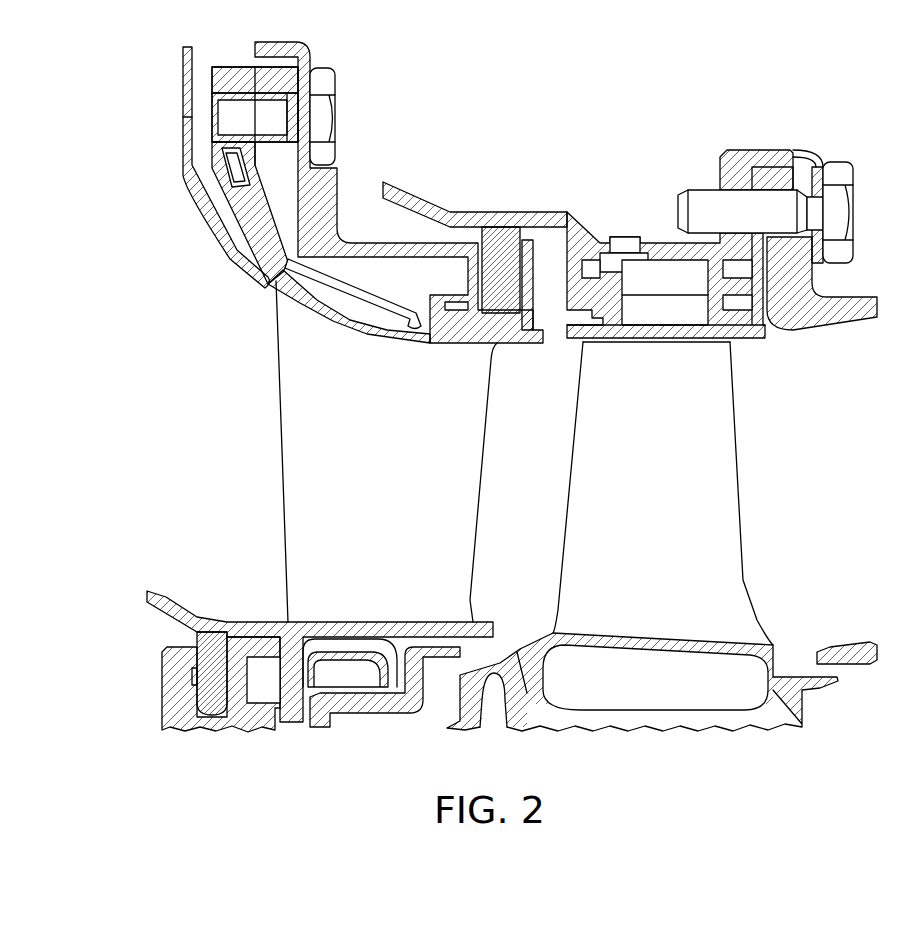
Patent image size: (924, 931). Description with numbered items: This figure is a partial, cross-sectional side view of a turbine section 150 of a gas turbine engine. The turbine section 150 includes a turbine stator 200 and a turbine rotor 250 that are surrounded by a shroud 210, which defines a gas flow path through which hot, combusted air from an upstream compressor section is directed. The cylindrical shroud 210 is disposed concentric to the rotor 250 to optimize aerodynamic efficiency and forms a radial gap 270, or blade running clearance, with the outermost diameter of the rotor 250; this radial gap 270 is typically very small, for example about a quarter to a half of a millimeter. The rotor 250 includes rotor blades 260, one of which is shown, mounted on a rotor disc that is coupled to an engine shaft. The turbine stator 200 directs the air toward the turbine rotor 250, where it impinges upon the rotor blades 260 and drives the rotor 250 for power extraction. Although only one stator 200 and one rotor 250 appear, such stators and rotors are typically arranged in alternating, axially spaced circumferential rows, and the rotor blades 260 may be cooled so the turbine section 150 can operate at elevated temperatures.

The turbine section 150 is at (432, 103).
The turbine stator 200 is at (282, 487).
The shroud 210 is at (572, 344).
The turbine rotor 250 is at (773, 567).
The rotor blades 260 is at (722, 422).
The radial gap 270 is at (740, 344).